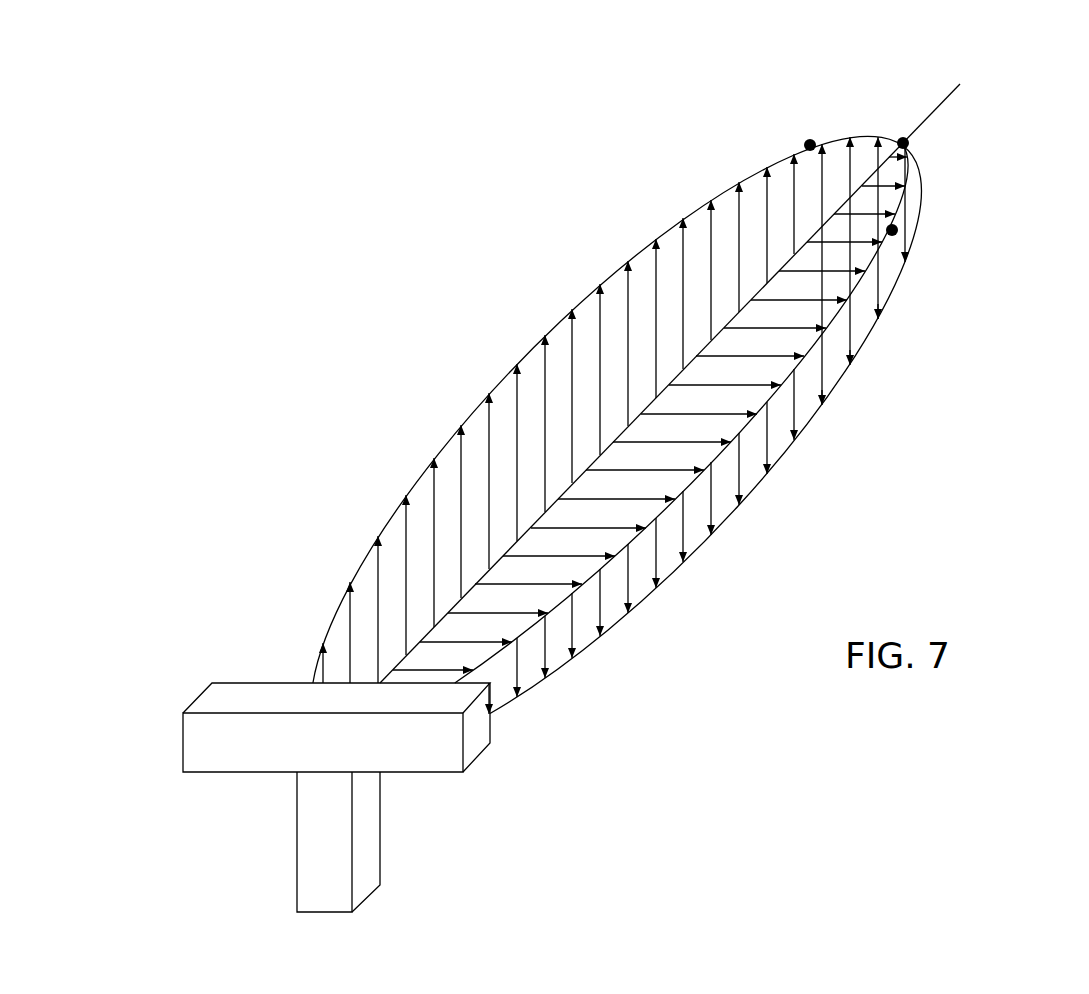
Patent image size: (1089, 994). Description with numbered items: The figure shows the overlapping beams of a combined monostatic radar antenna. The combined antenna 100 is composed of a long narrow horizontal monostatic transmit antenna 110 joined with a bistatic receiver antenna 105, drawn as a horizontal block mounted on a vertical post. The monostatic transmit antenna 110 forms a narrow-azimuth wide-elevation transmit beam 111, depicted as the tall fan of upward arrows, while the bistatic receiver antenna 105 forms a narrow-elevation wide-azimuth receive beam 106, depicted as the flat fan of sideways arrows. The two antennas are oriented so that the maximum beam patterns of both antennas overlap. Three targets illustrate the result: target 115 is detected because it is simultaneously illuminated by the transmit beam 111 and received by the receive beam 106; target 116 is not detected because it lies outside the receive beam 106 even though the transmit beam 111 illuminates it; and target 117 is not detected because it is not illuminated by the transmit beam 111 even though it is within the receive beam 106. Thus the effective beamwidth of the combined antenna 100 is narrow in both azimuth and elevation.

The combined antenna 100 is at (259, 641).
The bistatic receiver antenna 105 is at (380, 823).
The receive beam 106 is at (838, 318).
The monostatic transmit antenna 110 is at (465, 745).
The transmit beam 111 is at (672, 222).
The target 115 is at (903, 143).
The target 116 is at (810, 143).
The target 117 is at (892, 230).